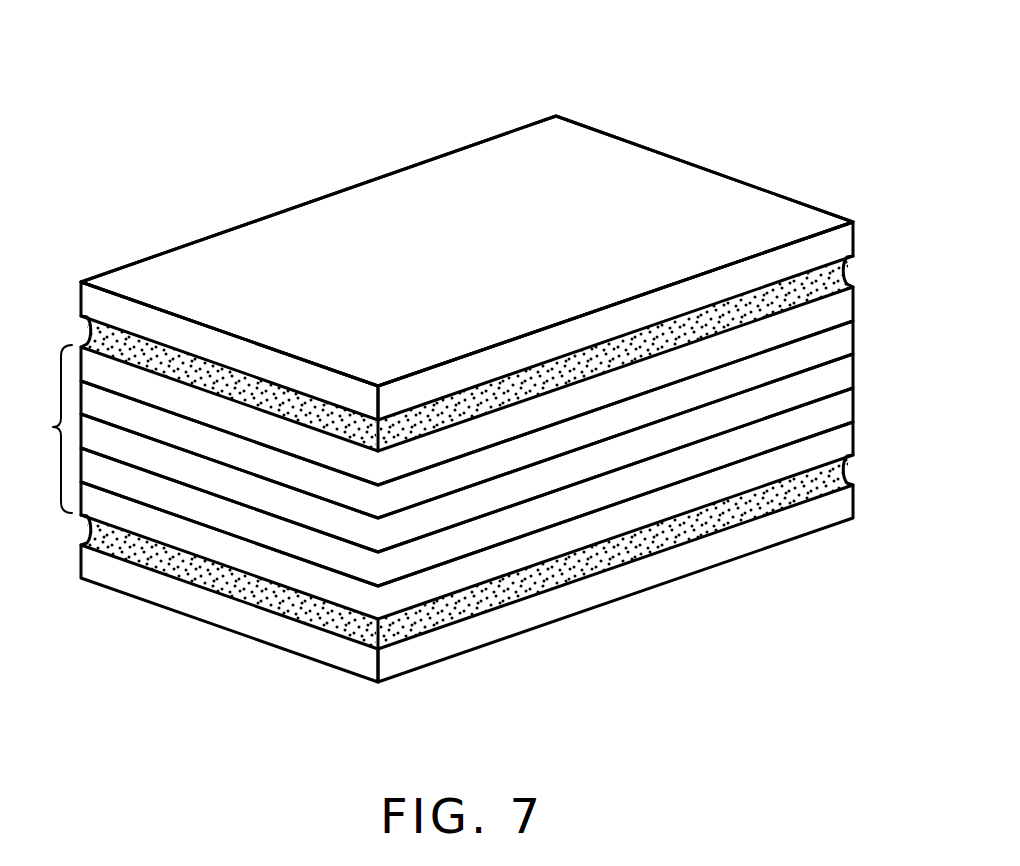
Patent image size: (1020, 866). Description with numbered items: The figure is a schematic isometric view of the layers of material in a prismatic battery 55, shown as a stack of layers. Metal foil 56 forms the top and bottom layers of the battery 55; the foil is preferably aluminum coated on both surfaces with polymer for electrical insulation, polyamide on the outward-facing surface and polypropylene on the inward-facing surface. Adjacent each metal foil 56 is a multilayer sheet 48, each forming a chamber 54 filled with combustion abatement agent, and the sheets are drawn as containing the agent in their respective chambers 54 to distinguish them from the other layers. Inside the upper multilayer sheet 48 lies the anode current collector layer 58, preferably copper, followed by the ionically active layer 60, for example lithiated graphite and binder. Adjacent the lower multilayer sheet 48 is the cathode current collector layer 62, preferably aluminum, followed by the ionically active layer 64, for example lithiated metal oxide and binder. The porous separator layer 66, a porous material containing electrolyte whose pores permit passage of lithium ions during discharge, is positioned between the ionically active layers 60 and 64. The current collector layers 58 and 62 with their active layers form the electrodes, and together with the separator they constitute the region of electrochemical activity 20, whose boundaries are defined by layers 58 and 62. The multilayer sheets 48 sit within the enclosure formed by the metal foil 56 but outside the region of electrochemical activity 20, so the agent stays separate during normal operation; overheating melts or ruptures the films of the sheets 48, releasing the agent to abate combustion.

The prismatic battery 55 is at (333, 70).
The metal foil 56 is at (856, 237).
The multilayer sheet 48 is at (850, 268).
The chamber 54 is at (808, 288).
The anode current collector layer 58 is at (856, 300).
The ionically active layer 60 is at (856, 333).
The porous separator layer 66 is at (856, 368).
The ionically active layer 64 is at (856, 403).
The cathode current collector layer 62 is at (856, 435).
The region of electrochemical activity 20 is at (42, 429).